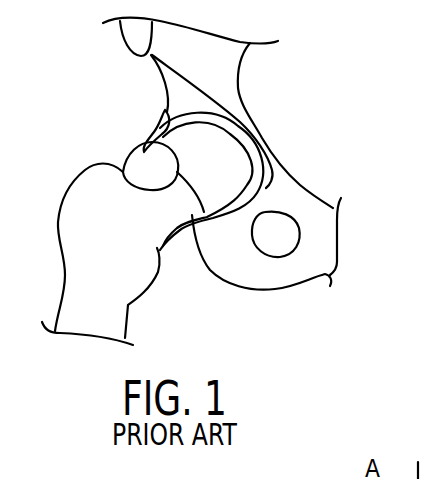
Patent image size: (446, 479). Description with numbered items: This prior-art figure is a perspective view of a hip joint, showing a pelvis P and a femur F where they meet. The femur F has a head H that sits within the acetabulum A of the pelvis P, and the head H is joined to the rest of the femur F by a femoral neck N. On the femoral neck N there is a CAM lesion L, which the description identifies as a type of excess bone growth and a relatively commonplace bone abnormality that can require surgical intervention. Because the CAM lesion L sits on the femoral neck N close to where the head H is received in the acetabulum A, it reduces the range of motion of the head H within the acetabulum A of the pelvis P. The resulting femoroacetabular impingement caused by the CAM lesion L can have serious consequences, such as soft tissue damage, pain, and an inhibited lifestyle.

The CAM lesion L is at (144, 162).
The pelvis P is at (213, 73).
The head H is at (217, 175).
The acetabulum A is at (248, 196).
The femur F is at (79, 267).
The femoral neck N is at (151, 220).